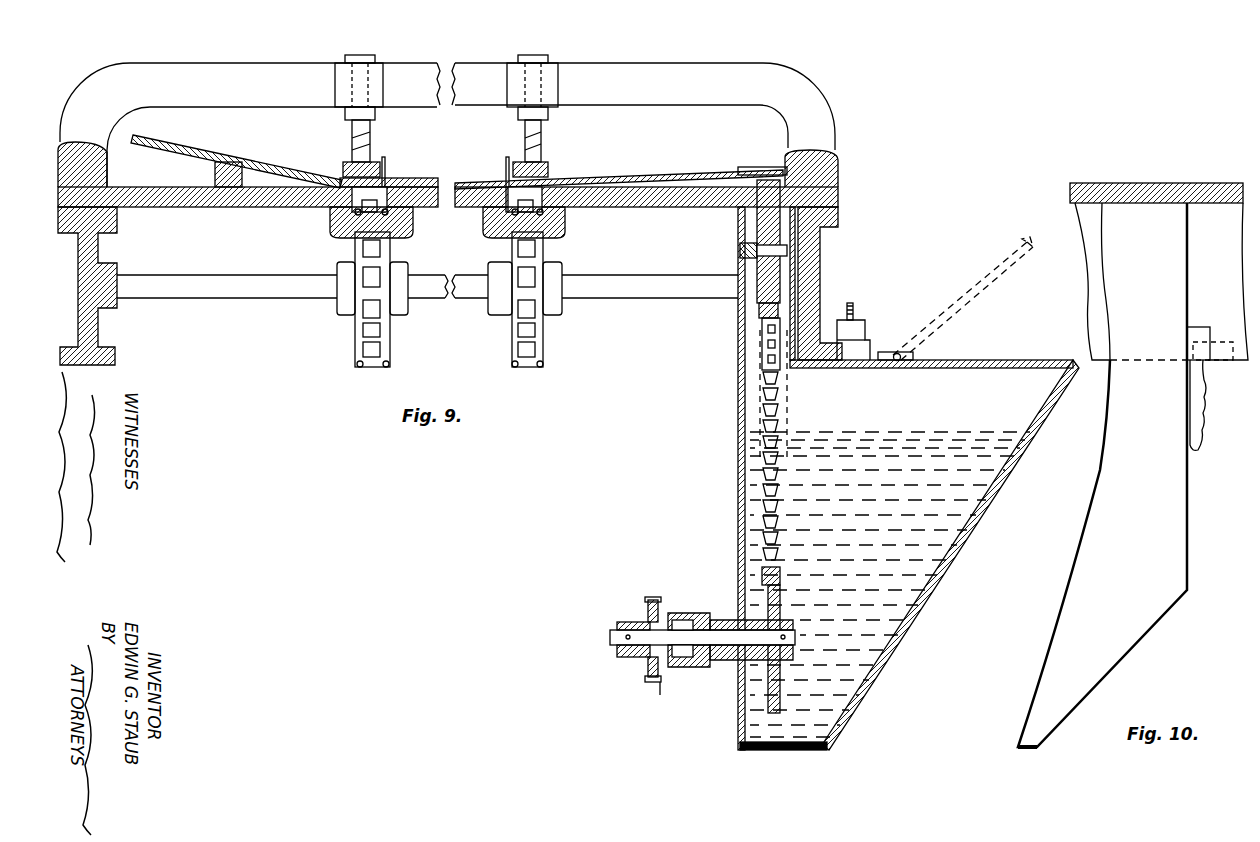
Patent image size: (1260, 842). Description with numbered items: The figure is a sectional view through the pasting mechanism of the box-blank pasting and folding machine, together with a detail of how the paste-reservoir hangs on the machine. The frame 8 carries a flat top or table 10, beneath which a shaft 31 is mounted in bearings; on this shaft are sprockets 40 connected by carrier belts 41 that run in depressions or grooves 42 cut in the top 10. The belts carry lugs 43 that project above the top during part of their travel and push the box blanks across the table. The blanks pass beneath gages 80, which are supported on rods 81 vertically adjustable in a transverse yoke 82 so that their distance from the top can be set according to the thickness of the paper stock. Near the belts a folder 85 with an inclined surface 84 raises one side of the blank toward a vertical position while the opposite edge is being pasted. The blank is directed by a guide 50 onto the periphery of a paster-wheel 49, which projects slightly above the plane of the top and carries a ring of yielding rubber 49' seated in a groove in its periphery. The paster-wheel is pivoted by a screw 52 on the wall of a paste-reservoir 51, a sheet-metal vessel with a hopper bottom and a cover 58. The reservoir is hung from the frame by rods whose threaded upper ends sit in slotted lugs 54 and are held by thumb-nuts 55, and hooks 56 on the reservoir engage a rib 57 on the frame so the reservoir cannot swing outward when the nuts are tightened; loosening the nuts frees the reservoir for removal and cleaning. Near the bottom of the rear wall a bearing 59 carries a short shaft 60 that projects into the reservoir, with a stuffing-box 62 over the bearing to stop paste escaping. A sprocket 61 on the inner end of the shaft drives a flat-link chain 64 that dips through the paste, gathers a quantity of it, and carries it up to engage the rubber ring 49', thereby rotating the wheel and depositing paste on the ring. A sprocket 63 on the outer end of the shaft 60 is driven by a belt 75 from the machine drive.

In FIG. 9, the frame 8 is at (98, 330).
In FIG. 10, the frame 8 is at (1161, 281).
In FIG. 9, the top 10 is at (179, 208).
In FIG. 10, the top 10 is at (1143, 183).
In FIG. 9, the shaft 31 is at (208, 288).
In FIG. 9, the sprocket 40 is at (388, 328).
In FIG. 9, the belt 41 is at (332, 238).
In FIG. 9, the groove 42 is at (338, 215).
In FIG. 9, the lug 43 is at (506, 172).
In FIG. 9, the paster-wheel 49 is at (743, 247).
In FIG. 9, the rubber ring 49' is at (740, 249).
In FIG. 9, the guide 50 is at (758, 168).
In FIG. 9, the paste-reservoir 51 is at (738, 366).
In FIG. 10, the paste-reservoir 51 is at (1102, 475).
In FIG. 9, the screw 52 is at (820, 250).
In FIG. 9, the slotted lug 54 is at (866, 348).
In FIG. 9, the thumb-nut 55 is at (853, 330).
In FIG. 10, the hook 56 is at (1205, 375).
In FIG. 10, the rib 57 is at (1220, 340).
In FIG. 9, the cover 58 is at (1008, 362).
In FIG. 9, the bearing 59 is at (726, 667).
In FIG. 9, the shaft 60 is at (610, 638).
In FIG. 9, the sprocket 61 is at (768, 700).
In FIG. 9, the stuffing-box 62 is at (690, 613).
In FIG. 9, the sprocket 63 is at (648, 615).
In FIG. 9, the chain 64 is at (780, 410).
In FIG. 9, the belt 75 is at (656, 699).
In FIG. 9, the gage 80 is at (344, 170).
In FIG. 9, the rod 81 is at (522, 138).
In FIG. 9, the yoke 82 is at (447, 125).
In FIG. 9, the inclined surface 84 is at (222, 160).
In FIG. 9, the folder 85 is at (217, 174).